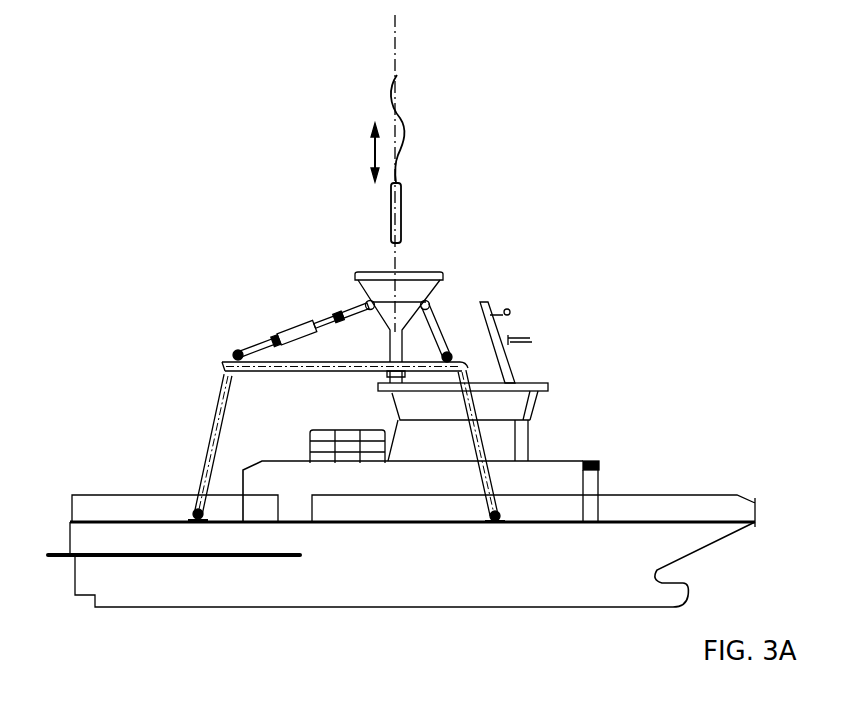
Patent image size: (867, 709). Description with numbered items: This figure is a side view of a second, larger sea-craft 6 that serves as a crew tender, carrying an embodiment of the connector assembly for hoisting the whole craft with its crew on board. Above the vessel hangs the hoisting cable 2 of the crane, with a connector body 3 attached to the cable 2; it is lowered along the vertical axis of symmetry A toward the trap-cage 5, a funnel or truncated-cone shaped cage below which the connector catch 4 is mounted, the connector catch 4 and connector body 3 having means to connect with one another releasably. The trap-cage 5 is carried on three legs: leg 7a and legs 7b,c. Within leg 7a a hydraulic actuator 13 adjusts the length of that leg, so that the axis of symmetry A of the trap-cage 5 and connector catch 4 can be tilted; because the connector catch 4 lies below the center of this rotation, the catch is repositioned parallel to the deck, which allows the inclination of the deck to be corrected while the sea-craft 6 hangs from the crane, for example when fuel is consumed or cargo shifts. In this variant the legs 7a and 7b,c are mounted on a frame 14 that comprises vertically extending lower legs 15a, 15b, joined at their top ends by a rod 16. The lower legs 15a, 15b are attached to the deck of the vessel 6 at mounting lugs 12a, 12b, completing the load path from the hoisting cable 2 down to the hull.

The axis of symmetry A is at (406, 173).
The hoisting cable 2 is at (403, 146).
The connector body 3 is at (404, 221).
The connector catch 4 is at (293, 304).
The trap-cage 5 is at (372, 277).
The sea-craft 6 is at (677, 535).
The leg 7a is at (326, 313).
The legs 7b,c is at (432, 322).
The mounting lug 12a is at (190, 517).
The mounting lug 12b is at (498, 515).
The hydraulic actuator 13 is at (298, 332).
The frame 14 is at (371, 414).
The lower leg 15a is at (217, 412).
The lower leg 15b is at (487, 445).
The rod 16 is at (270, 371).